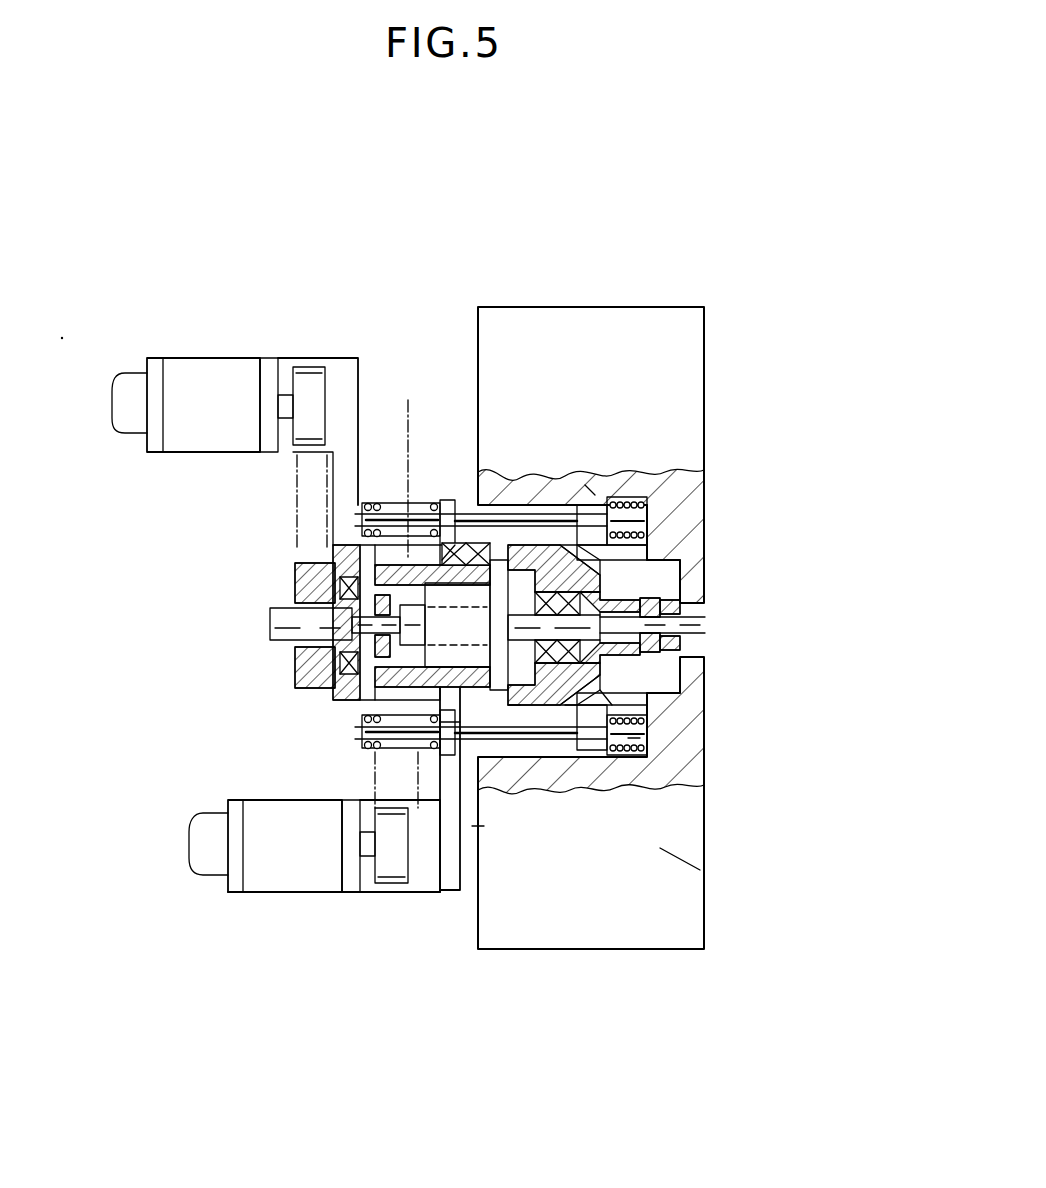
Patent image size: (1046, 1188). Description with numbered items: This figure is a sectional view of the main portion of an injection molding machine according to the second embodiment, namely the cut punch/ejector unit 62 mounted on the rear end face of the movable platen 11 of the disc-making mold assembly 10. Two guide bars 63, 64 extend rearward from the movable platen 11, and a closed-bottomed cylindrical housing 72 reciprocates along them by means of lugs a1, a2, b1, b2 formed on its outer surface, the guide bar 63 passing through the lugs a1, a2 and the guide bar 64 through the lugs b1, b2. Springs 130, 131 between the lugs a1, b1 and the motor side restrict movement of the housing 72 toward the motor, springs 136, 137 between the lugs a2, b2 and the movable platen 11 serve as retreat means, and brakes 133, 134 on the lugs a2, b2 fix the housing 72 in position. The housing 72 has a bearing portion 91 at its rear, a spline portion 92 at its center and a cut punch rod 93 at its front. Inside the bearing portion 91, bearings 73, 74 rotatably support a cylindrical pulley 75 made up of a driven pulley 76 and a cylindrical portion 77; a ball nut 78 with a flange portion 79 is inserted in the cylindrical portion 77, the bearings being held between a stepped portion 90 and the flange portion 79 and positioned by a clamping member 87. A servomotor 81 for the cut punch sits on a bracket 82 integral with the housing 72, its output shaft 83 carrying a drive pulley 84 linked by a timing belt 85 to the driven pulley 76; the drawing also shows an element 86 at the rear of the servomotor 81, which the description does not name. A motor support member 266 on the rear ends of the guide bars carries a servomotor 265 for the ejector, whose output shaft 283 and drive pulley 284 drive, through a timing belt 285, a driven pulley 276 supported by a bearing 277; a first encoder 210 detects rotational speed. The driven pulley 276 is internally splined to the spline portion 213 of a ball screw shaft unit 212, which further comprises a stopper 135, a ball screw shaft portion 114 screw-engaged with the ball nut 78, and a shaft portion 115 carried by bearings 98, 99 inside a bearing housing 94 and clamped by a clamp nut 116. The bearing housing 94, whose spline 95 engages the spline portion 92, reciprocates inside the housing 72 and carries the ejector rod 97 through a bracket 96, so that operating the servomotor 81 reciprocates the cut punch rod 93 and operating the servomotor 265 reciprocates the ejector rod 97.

The disc-making mold assembly 10 is at (560, 240).
The movable platen 11 is at (668, 304).
The cut punch/ejector unit 62 is at (413, 400).
The guide bar 63 is at (538, 545).
The guide bar 64 is at (653, 790).
The housing 72 is at (572, 503).
The bearing 73 is at (454, 800).
The bearing 74 is at (497, 670).
The cylindrical pulley 75 is at (418, 545).
The driven pulley 76 is at (400, 585).
The cylindrical portion 77 is at (475, 535).
The ball nut 78 is at (530, 692).
The flange portion 79 is at (496, 530).
The servomotor 81 is at (272, 862).
The bracket 82 is at (366, 885).
The output shaft 83 is at (365, 843).
The drive pulley 84 is at (383, 828).
The timing belt 85 is at (378, 770).
The motor cap 86 is at (208, 838).
The clamping member 87 is at (428, 515).
The stepped portion 90 is at (408, 503).
The bearing portion 91 is at (503, 568).
The spline portion 92 is at (600, 475).
The cut punch rod 93 is at (705, 622).
The bearing housing 94 is at (660, 848).
The spline 95 is at (578, 520).
The bracket 96 is at (683, 595).
The ejector rod 97 is at (700, 636).
The bearing 98 is at (622, 573).
The bearing 99 is at (650, 578).
The ball screw shaft portion 114 is at (592, 735).
The shaft portion 115 is at (683, 592).
The clamp nut 116 is at (655, 675).
The spring 130 is at (405, 400).
The spring 131 is at (418, 893).
The brake 133 is at (632, 505).
The brake 134 is at (645, 702).
The stopper 135 is at (293, 603).
The spring 136 is at (652, 494).
The spring 137 is at (635, 750).
The first encoder 210 is at (120, 410).
The ball screw shaft unit 212 is at (335, 547).
The spline portion 213 is at (280, 638).
The servomotor 265 is at (208, 382).
The motor support member 266 is at (345, 382).
The driven pulley 276 is at (300, 564).
The bearing 277 is at (320, 692).
The output shaft 283 is at (285, 407).
The drive pulley 284 is at (309, 372).
The timing belt 285 is at (300, 478).
The lug a1 is at (452, 502).
The lug a2 is at (590, 490).
The lug b1 is at (478, 828).
The lug b2 is at (633, 740).